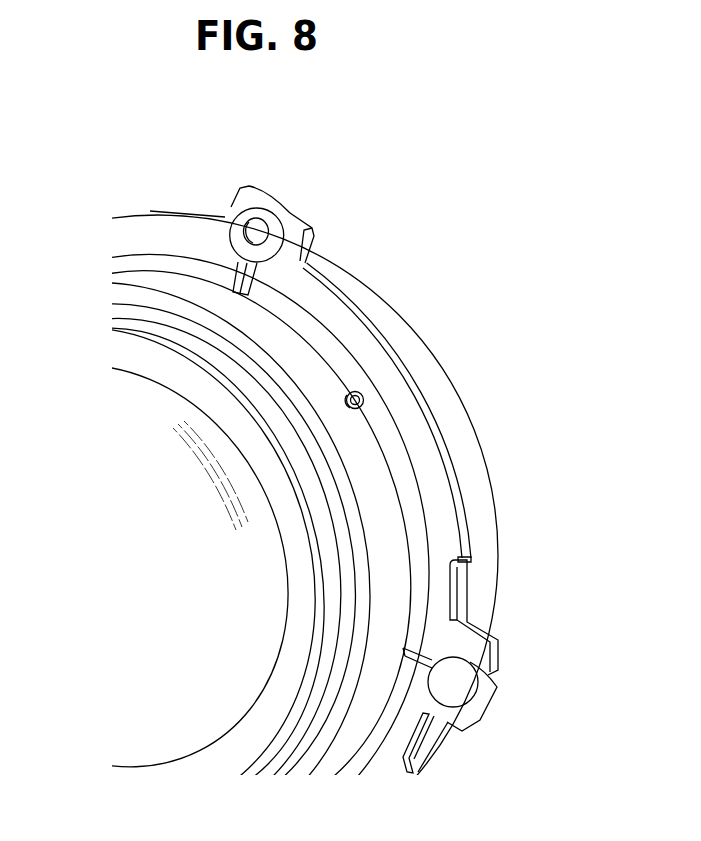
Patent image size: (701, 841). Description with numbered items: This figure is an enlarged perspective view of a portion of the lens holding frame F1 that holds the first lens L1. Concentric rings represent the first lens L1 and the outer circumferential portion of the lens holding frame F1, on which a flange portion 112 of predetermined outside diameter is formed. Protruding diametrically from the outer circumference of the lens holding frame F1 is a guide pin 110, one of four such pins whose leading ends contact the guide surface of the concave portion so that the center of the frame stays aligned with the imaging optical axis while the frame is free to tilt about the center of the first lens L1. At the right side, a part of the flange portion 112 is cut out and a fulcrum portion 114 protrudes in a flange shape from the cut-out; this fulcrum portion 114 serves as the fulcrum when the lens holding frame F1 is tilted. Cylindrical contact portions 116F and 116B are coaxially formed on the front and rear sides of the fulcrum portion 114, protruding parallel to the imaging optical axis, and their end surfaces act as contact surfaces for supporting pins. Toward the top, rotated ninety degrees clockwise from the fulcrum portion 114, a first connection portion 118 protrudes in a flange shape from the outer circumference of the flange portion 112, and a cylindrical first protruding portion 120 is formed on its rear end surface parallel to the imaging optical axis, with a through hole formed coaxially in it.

The first lens L1 is at (147, 560).
The lens holding frame F1 is at (466, 427).
The flange portion 112 is at (334, 301).
The guide pin 110 is at (360, 393).
The first protruding portion 120 is at (227, 215).
The first connection portion 118 is at (305, 212).
The fulcrum portion 114 is at (472, 637).
The front contact portion 116F is at (490, 687).
The rear contact portion 116B is at (452, 730).